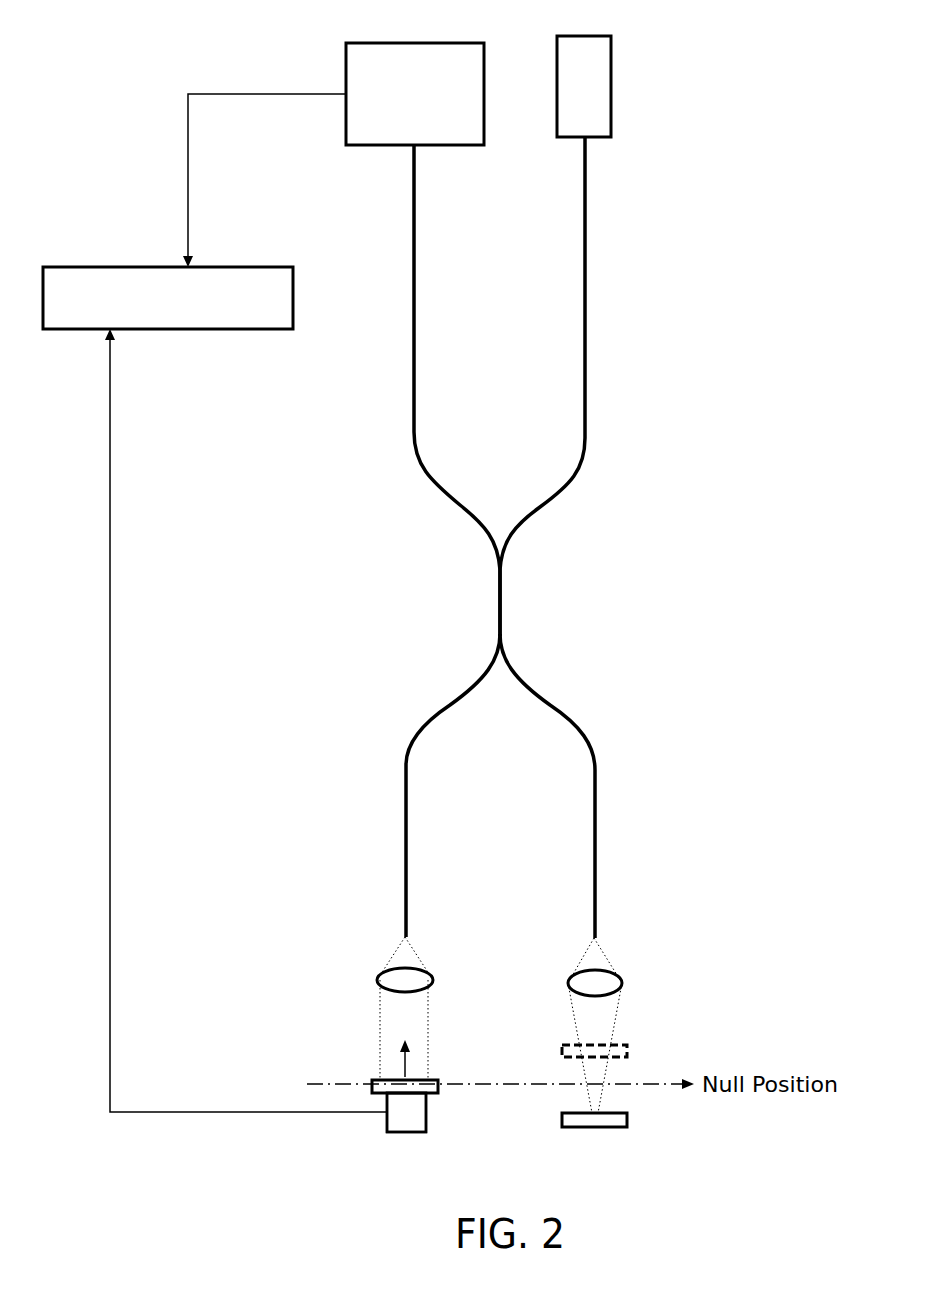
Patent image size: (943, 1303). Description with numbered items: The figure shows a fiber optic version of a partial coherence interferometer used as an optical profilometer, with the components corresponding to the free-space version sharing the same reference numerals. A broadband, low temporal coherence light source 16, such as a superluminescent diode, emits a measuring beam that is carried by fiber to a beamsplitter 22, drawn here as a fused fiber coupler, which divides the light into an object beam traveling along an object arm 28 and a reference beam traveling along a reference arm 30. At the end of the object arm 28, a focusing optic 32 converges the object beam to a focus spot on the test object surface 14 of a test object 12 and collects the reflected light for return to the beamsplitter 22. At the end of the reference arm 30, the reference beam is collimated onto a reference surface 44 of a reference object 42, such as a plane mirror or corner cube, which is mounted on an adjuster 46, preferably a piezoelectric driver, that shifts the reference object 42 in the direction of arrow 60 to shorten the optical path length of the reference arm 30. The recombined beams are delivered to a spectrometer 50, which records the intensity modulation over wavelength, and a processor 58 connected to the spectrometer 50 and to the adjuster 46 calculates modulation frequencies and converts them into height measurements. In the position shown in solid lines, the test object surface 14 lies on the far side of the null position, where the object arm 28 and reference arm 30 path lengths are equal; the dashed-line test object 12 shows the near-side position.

The test object 12 is at (635, 1048).
The test object surface 14 is at (575, 1113).
The light source 16 is at (584, 86).
The beamsplitter 22 is at (503, 602).
The object arm 28 is at (597, 815).
The reference arm 30 is at (404, 766).
The focusing optic 32 is at (622, 983).
The reference object 42 is at (438, 1093).
The reference surface 44 is at (380, 1080).
The adjuster 46 is at (404, 1128).
The spectrometer 50 is at (415, 94).
The processor 58 is at (168, 298).
The arrow 60 is at (407, 1067).